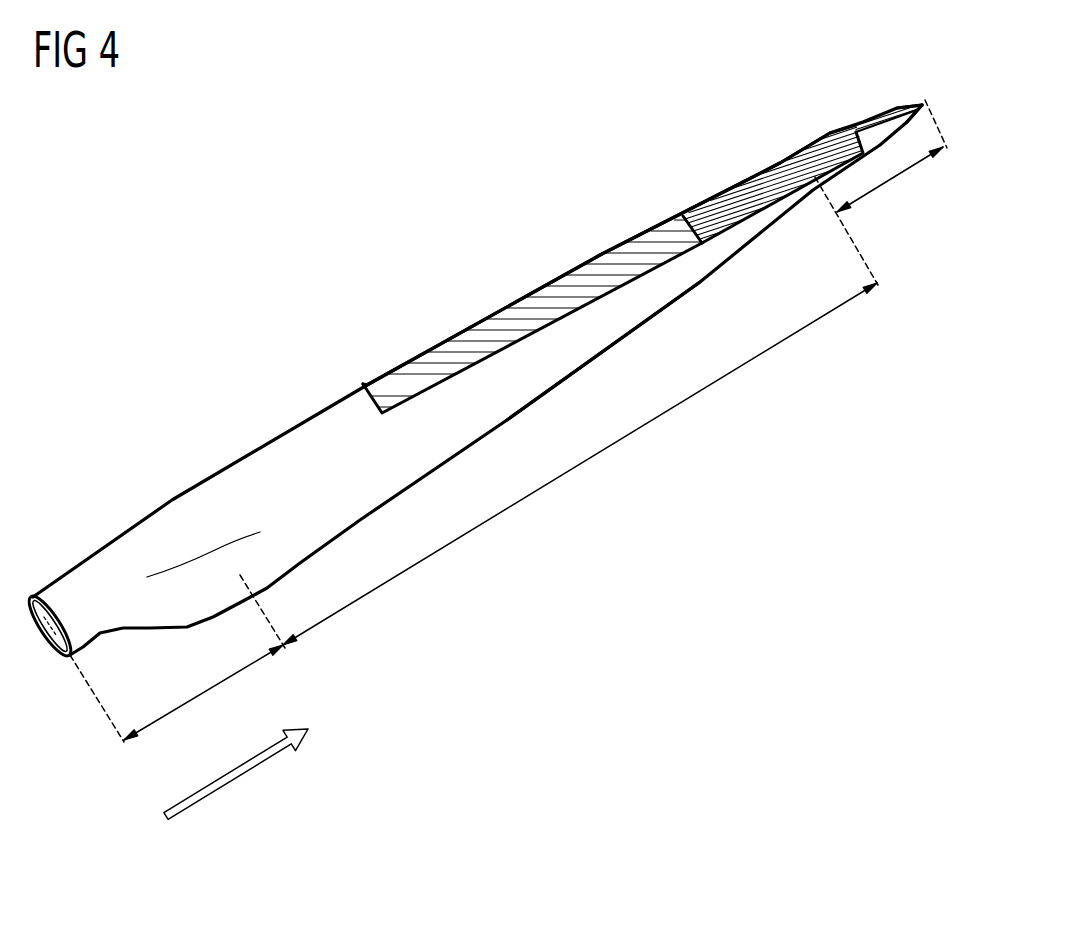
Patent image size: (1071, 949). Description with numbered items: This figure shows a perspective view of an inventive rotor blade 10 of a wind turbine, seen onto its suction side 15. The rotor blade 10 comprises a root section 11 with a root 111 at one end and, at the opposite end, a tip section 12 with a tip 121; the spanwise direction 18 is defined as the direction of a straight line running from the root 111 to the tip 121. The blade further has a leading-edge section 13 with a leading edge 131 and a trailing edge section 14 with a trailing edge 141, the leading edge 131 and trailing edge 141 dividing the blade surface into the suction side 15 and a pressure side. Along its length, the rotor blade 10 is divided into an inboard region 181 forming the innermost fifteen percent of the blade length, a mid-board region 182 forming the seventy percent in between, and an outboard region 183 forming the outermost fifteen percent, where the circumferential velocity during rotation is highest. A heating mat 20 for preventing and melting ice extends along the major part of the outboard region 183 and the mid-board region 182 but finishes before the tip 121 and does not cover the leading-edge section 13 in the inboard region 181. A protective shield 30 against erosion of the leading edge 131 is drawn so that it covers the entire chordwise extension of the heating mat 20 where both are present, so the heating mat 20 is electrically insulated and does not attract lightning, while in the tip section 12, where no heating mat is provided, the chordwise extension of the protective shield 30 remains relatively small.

The rotor blade 10 is at (308, 223).
The root section 11 is at (62, 595).
The root 111 is at (45, 640).
The tip section 12 is at (880, 137).
The tip 121 is at (927, 102).
The leading-edge section 13 is at (405, 380).
The leading edge 131 is at (478, 318).
The trailing edge section 14 is at (360, 513).
The trailing edge 141 is at (570, 375).
The suction side 15 is at (278, 445).
The spanwise direction 18 is at (232, 773).
The inboard region 181 is at (213, 687).
The mid-board region 182 is at (592, 458).
The outboard region 183 is at (892, 180).
The heating mat 20 is at (565, 295).
The protective shield 30 is at (777, 177).